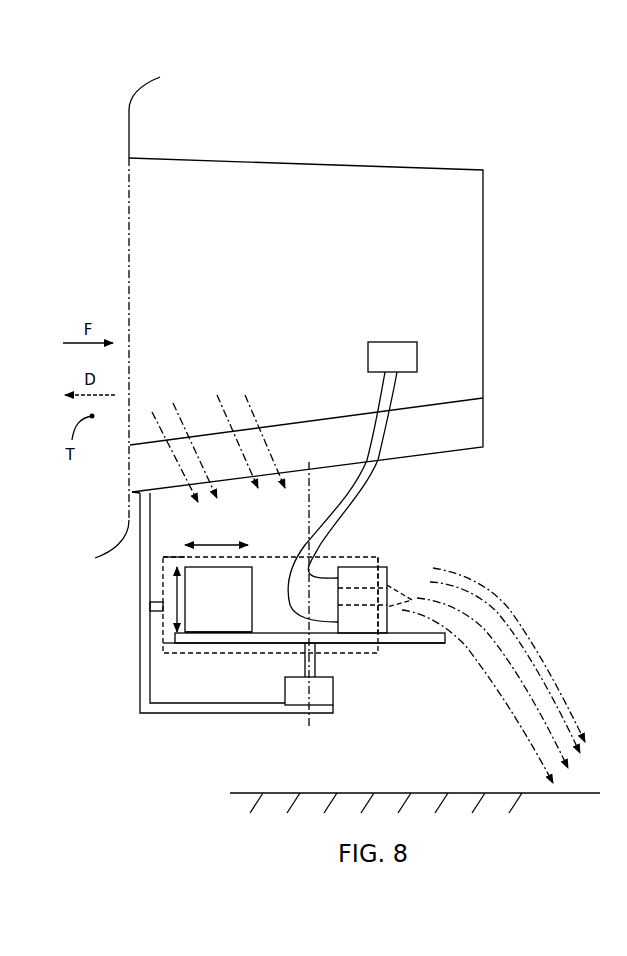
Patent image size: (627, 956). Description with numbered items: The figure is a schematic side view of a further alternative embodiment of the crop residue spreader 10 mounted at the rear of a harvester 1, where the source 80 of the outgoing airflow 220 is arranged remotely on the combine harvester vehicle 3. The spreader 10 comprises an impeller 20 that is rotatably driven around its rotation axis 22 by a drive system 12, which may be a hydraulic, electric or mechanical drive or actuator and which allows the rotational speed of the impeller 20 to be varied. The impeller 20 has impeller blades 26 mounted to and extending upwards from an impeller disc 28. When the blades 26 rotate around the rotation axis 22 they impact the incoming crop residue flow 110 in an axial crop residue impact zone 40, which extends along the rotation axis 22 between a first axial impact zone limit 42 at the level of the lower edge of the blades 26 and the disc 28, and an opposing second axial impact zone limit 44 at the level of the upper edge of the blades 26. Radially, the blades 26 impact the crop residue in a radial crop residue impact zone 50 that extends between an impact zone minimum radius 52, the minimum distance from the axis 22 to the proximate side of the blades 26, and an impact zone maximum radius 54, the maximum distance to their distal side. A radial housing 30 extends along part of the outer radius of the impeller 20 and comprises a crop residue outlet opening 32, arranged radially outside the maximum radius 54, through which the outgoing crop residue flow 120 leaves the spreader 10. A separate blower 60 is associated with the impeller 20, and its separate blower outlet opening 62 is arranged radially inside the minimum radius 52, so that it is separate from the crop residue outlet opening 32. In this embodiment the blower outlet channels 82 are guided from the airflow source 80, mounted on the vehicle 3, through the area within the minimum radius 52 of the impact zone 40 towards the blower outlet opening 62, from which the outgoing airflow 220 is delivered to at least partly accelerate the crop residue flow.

The harvester 1 is at (228, 137).
The combine harvester vehicle 3 is at (328, 182).
The crop residue spreader 10 is at (408, 503).
The drive system 12 is at (322, 695).
The impeller 20 is at (225, 638).
The rotation axis 22 is at (320, 470).
The impeller blades 26 is at (217, 617).
The impeller disc 28 is at (252, 637).
The radial housing 30 is at (173, 660).
The crop residue outlet opening 32 is at (437, 615).
The axial crop residue impact zone 40 is at (177, 590).
The first axial impact zone limit 42 is at (168, 635).
The second axial impact zone limit 44 is at (168, 570).
The radial crop residue impact zone 50 is at (223, 545).
The impact zone minimum radius 52 is at (248, 533).
The impact zone maximum radius 54 is at (185, 533).
The separate blower 60 is at (328, 547).
The separate blower outlet opening 62 is at (342, 578).
The source of the outgoing airflow 80 is at (405, 342).
The blower outlet channels 82 is at (377, 447).
The incoming crop residue flow 110 is at (257, 403).
The outgoing crop residue flow 120 is at (490, 568).
The outgoing airflow 220 is at (400, 572).